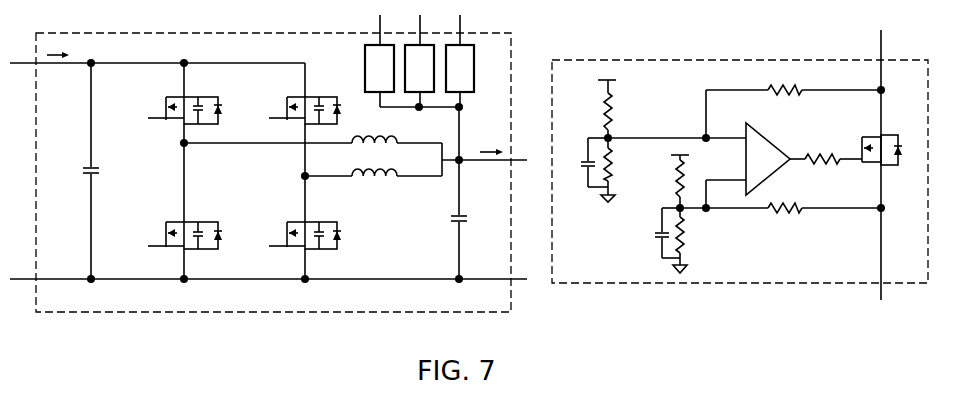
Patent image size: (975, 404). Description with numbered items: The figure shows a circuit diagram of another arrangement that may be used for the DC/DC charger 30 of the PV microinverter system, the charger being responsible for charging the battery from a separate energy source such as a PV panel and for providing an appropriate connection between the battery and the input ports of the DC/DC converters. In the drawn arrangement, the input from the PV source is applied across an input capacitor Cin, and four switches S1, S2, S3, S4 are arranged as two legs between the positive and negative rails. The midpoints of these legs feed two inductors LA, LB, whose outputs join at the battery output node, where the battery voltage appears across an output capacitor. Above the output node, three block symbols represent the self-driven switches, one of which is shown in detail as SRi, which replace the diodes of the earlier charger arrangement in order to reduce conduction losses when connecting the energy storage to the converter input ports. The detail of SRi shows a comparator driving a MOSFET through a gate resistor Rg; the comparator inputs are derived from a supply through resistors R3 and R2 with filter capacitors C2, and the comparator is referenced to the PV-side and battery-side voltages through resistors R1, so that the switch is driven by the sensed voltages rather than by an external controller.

The DC/DC charger 30 is at (80, 322).
The input capacitor Cin is at (100, 171).
The switch S1 (MOSFET) S1 is at (180, 106).
The switch S2 (MOSFET) S2 is at (180, 235).
The switch S3 (MOSFET) S3 is at (301, 106).
The switch S4 (MOSFET) S4 is at (301, 235).
The inductor LA is at (374, 130).
The inductor LB is at (374, 166).
The self-driven switch SRi is at (549, 102).
The resistor R1 is at (785, 140).
The resistor R2 is at (654, 200).
The resistor R3 is at (644, 145).
The gate resistor Rg is at (822, 148).
The capacitor C2 is at (613, 198).